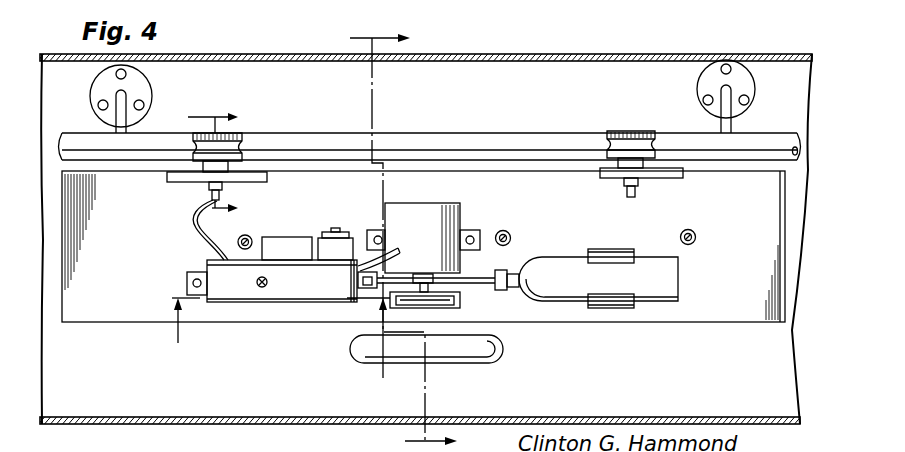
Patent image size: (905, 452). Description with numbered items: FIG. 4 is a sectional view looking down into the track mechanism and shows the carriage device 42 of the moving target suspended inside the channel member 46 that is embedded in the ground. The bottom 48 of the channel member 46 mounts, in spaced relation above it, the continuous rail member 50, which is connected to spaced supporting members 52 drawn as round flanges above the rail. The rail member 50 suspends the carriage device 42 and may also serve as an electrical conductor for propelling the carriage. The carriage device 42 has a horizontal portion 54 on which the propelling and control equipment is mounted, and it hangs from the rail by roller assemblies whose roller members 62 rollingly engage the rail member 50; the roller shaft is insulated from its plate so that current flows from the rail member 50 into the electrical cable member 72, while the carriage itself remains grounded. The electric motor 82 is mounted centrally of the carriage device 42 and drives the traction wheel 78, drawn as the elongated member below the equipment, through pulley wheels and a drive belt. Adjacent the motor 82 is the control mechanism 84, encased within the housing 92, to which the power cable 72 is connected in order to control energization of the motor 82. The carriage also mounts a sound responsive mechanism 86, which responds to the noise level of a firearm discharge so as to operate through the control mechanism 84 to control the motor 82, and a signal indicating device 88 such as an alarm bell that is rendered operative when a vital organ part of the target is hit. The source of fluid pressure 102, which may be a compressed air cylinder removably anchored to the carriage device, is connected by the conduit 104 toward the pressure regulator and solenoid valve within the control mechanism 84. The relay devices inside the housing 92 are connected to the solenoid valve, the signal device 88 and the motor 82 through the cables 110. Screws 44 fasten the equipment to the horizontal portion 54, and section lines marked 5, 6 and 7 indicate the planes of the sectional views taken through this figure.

The carriage device 42 is at (668, 324).
The mounting screws 44 is at (510, 232).
The channel member 46 is at (170, 426).
The bottom of the channel member 48 is at (426, 30).
The rail member 50 is at (470, 132).
The supporting members 52 is at (123, 113).
The horizontal portion 54 is at (423, 246).
The roller member 62 is at (232, 148).
The electrical cable member 72 is at (214, 198).
The traction wheel 78 is at (505, 347).
The electric motor 82 is at (443, 222).
The control mechanism 84 is at (284, 305).
The sound responsive mechanism 86 is at (287, 237).
The signal indicating device 88 is at (331, 231).
The housing 92 is at (260, 288).
The source of fluid pressure 102 is at (569, 265).
The conduit 104 is at (466, 284).
The cables 110 is at (367, 258).
The section line 5- 5 is at (412, 239).
The section line 6- 6 is at (281, 338).
The section line 7- 7 is at (221, 162).